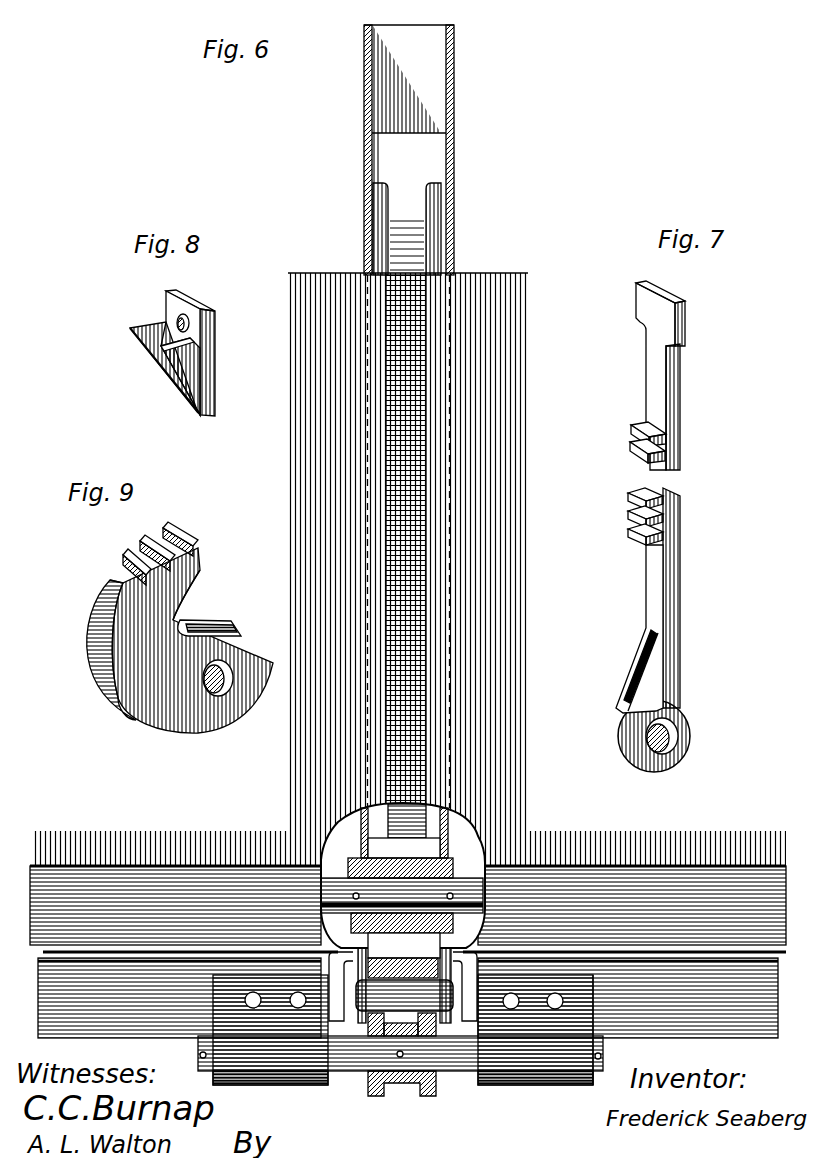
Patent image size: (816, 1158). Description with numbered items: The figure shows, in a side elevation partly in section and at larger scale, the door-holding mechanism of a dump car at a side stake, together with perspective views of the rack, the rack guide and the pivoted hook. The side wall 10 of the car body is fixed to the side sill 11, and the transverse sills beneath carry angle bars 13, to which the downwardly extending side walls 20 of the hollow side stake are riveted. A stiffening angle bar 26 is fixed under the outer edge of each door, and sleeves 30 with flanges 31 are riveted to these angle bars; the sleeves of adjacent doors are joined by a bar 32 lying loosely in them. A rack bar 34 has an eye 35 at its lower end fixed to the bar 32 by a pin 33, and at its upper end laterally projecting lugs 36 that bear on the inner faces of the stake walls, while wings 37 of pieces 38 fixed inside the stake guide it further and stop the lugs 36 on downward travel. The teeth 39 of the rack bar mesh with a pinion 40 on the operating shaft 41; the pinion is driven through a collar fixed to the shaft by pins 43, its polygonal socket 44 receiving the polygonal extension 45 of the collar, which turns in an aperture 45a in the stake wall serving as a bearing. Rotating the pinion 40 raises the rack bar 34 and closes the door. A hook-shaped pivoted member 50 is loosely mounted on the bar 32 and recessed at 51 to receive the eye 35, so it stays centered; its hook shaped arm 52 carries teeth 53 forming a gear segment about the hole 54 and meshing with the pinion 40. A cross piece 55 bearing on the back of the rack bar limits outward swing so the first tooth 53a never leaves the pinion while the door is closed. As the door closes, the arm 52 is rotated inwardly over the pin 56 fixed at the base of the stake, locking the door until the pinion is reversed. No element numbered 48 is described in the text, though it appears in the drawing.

In FIG. 6, the side wall 10 is at (413, 569).
In FIG. 6, the side sill 11 is at (40, 880).
In FIG. 6, the angle bar 13 is at (462, 1015).
In FIG. 6, the side wall of side stake 20 is at (437, 1012).
In FIG. 6, the stiffening angle bar 26 is at (696, 1022).
In FIG. 6, the sleeve 30 is at (287, 1078).
In FIG. 6, the flange 31 is at (585, 1002).
In FIG. 6, the bar 32 is at (346, 1065).
In FIG. 6, the pin 33 is at (393, 1082).
In FIG. 6, the rack bar 34 is at (400, 200).
In FIG. 7, the rack bar 34 is at (663, 573).
In FIG. 6, the eye 35 is at (383, 1082).
In FIG. 7, the eye 35 is at (677, 720).
In FIG. 6, the laterally projecting lug 36 is at (375, 162).
In FIG. 7, the laterally projecting lug 36 is at (632, 287).
In FIG. 8, the wing 37 is at (138, 344).
In FIG. 8, the guide piece 38 is at (181, 297).
In FIG. 7, the teeth 39 is at (642, 416).
In FIG. 6, the pinion 40 is at (420, 840).
In FIG. 6, the operating shaft 41 is at (445, 886).
In FIG. 6, the pin 43 is at (463, 880).
In FIG. 6, the polygonal socket 44 is at (348, 840).
In FIG. 6, the polygonal extension 45 is at (403, 875).
In FIG. 6, the aperture 45a is at (433, 848).
In FIG. 6, the collar 48 is at (345, 860).
In FIG. 6, the pivoted member 50 is at (368, 1067).
In FIG. 9, the pivoted member 50 is at (158, 705).
In FIG. 9, the recess 51 is at (203, 618).
In FIG. 9, the hook shaped arm 52 is at (190, 562).
In FIG. 9, the teeth 53 is at (140, 527).
In FIG. 9, the first tooth 53a is at (165, 528).
In FIG. 9, the hole 54 is at (226, 678).
In FIG. 9, the cross piece 55 is at (225, 620).
In FIG. 6, the pin 56 is at (404, 995).